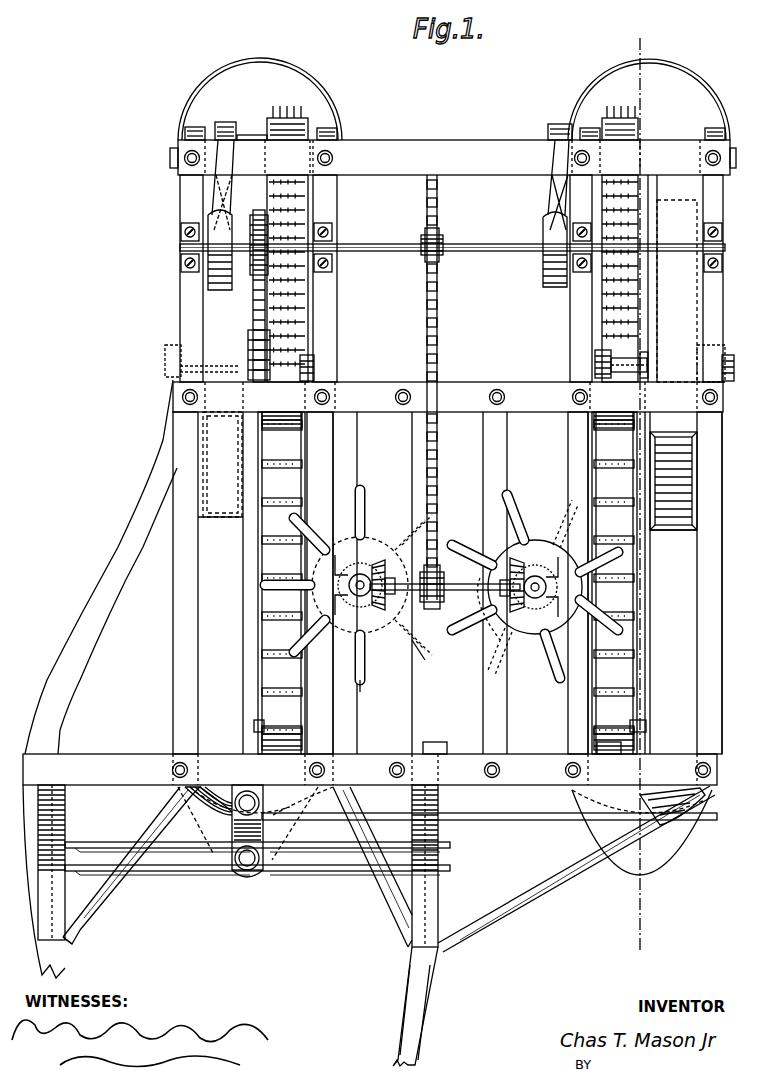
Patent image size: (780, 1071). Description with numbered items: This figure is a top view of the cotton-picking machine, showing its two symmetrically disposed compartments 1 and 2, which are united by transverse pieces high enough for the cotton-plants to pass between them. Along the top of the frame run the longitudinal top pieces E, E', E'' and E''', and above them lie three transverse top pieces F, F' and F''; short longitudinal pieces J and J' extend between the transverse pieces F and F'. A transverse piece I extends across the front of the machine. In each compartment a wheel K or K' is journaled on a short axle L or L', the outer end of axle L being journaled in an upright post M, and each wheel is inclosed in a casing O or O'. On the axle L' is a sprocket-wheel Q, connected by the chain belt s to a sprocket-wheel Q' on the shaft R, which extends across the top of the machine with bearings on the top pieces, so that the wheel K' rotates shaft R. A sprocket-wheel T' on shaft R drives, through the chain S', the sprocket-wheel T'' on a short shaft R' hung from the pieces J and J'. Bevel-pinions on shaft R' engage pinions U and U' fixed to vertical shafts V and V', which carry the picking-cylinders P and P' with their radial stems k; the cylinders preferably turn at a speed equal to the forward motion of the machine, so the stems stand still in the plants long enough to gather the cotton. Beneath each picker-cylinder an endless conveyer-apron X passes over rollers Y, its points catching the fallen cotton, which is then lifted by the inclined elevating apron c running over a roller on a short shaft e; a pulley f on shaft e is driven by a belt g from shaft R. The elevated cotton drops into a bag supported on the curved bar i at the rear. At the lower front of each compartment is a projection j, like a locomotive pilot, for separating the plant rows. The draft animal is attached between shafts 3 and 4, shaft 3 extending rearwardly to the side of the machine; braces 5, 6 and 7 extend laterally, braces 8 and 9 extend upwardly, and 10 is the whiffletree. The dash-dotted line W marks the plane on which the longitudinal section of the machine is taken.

The section line w w W is at (655, 492).
The curved bar i is at (454, 89).
The transverse top piece F'' is at (453, 157).
The transverse top piece F' is at (448, 397).
The transverse top piece F is at (370, 763).
The compartment 1 is at (265, 464).
The compartment 2 is at (567, 464).
The longitudinal top piece E''' is at (111, 679).
The longitudinal top piece E' is at (327, 583).
The longitudinal top piece E'' is at (577, 583).
The longitudinal top piece E is at (711, 583).
The elevating apron c is at (305, 120).
The short shaft e is at (255, 140).
The pulley f is at (220, 133).
The belt g is at (215, 185).
The shaft R is at (452, 252).
The sprocket-wheel T' is at (440, 235).
The chain S' is at (440, 387).
The sprocket-wheel Q is at (245, 296).
The sprocket-wheel Q' is at (255, 231).
The chain belt s is at (254, 303).
The axle L' is at (239, 363).
The axle L is at (621, 361).
The upright post M is at (715, 363).
The wheel K' is at (222, 464).
The casing O' is at (220, 532).
The wheel K is at (673, 481).
The casing O is at (673, 542).
The conveyer-apron X is at (447, 583).
The roller Y is at (636, 722).
The picking-cylinder P' is at (348, 582).
The vertical shaft V is at (365, 583).
The bevel-pinion U is at (360, 598).
The picking-cylinder P is at (535, 586).
The vertical shaft V' is at (529, 576).
The bevel-pinion U' is at (535, 597).
The short shaft R' is at (445, 595).
The lower sprocket T'' is at (430, 599).
The paddle k is at (362, 670).
The transverse piece I is at (391, 833).
The brace 8 is at (51, 862).
The brace 5 is at (131, 865).
The brace 6 is at (372, 867).
The brace 9 is at (425, 866).
The shaft 4 is at (422, 1006).
The brace 7 is at (576, 869).
The shaft 3 is at (71, 940).
The whiffletree 10 is at (302, 837).
The projection j is at (250, 872).
The short longitudinal piece J is at (549, 790).
The short longitudinal piece J' is at (344, 759).